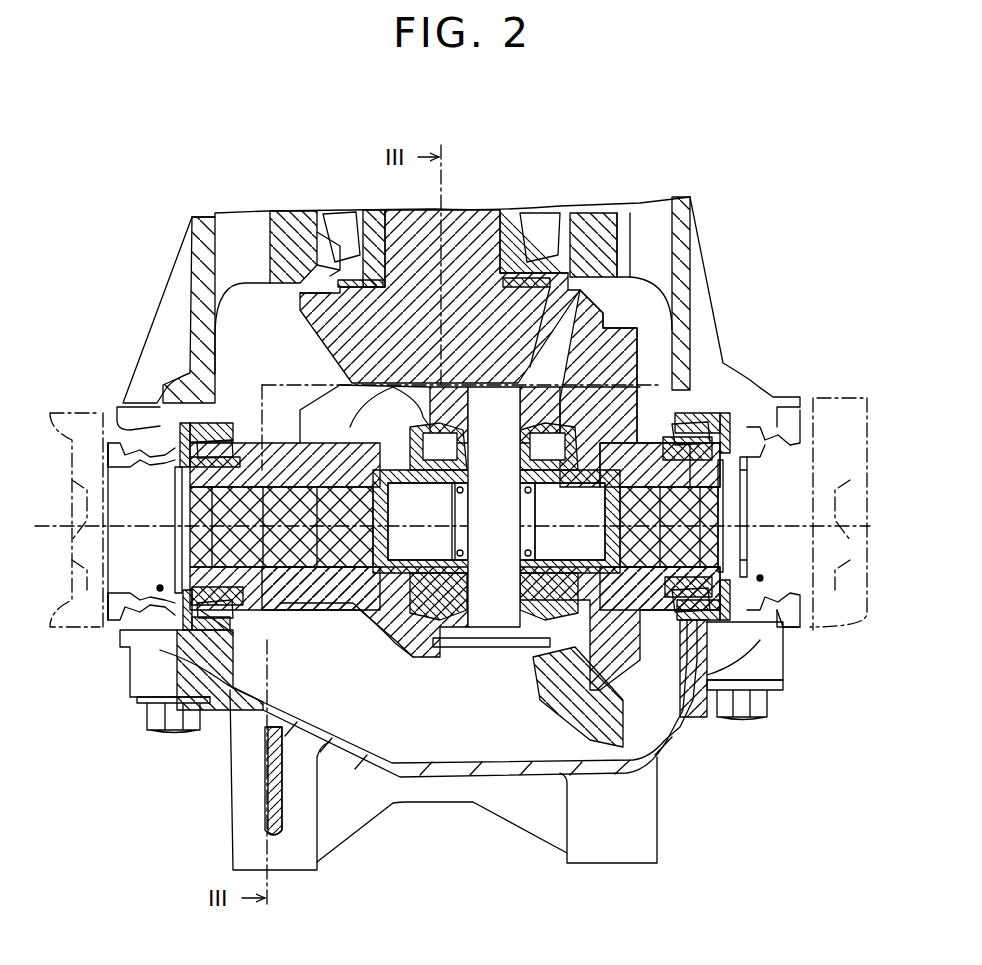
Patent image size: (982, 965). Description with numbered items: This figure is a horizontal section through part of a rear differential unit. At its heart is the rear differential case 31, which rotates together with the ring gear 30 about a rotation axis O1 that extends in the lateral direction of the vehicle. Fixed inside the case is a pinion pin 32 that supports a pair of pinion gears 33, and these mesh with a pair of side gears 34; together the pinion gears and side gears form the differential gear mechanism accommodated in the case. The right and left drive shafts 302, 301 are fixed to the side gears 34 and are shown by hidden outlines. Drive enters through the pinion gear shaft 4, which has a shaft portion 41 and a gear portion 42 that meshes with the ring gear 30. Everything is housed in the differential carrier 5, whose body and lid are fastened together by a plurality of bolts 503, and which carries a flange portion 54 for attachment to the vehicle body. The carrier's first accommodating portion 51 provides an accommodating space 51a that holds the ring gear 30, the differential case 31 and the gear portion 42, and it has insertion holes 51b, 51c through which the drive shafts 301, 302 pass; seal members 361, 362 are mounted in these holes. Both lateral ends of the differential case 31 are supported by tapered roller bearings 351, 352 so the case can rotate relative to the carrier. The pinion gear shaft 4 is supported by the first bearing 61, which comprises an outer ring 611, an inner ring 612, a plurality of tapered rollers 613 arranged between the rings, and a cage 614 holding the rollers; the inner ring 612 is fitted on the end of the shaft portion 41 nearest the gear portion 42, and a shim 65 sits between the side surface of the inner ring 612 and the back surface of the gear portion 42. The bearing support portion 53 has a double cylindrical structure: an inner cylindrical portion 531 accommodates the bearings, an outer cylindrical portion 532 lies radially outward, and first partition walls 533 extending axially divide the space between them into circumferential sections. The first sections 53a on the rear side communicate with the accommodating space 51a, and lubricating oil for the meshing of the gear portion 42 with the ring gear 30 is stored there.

The pinion gear shaft 4 is at (440, 250).
The shaft portion 41 is at (463, 223).
The gear portion 42 is at (508, 303).
The differential carrier 5 is at (457, 740).
The ring gear 30 is at (597, 347).
The rear differential case 31 is at (390, 587).
The pinion pin 32 is at (490, 627).
The pinion gears 33 is at (453, 430).
The side gears 34 is at (427, 457).
The first accommodating portion 51 is at (752, 373).
The accommodating space 51a is at (467, 737).
The insertion hole 51b is at (140, 493).
The insertion hole 51c is at (785, 472).
The bearing support portion 53 is at (190, 287).
The first section 53a is at (232, 252).
The inner cylindrical portion 531 is at (583, 223).
The outer cylindrical portion 532 is at (680, 217).
The first partition walls 533 is at (240, 297).
The flange portion 54 is at (228, 828).
The first bearing 61 is at (290, 200).
The outer ring 611 is at (318, 220).
The inner ring 612 is at (359, 220).
The tapered rollers 613 is at (345, 227).
The cage 614 is at (320, 248).
The shim 65 is at (330, 325).
The drive shaft 301 is at (80, 410).
The drive shaft 302 is at (840, 400).
The bearing 351 is at (210, 697).
The bearing 352 is at (698, 620).
The seal member 361 is at (162, 587).
The seal member 362 is at (760, 577).
The bolts 503 is at (167, 733).
The rotation axis O1 is at (33, 527).